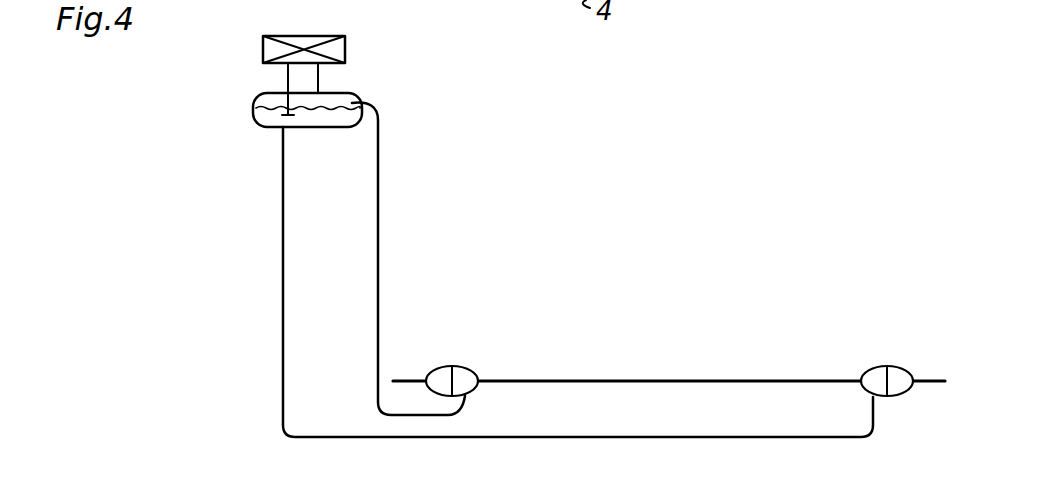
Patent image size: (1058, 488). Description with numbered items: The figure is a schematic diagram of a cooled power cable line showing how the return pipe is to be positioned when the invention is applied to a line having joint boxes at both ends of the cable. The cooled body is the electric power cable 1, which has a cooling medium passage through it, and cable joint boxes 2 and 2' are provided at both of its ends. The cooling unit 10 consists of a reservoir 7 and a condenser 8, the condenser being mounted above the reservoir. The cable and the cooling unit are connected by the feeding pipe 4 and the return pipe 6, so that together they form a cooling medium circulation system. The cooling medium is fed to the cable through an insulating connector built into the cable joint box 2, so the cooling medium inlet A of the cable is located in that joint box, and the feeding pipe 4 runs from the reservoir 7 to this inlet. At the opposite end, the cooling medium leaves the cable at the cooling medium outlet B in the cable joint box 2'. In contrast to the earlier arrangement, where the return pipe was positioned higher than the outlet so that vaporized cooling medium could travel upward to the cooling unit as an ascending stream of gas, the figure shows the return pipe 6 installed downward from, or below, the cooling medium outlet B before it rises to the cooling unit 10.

The electric power cable 1 is at (666, 381).
The cable joint box 2 is at (868, 365).
The cable joint box 2' is at (471, 360).
The feeding pipe 4 is at (633, 438).
The return pipe 6 is at (379, 190).
The reservoir 7 is at (253, 105).
The condenser 8 is at (263, 46).
The cooling unit 10 is at (200, 27).
The cooling medium inlet A is at (880, 388).
The cooling medium outlet B is at (455, 383).